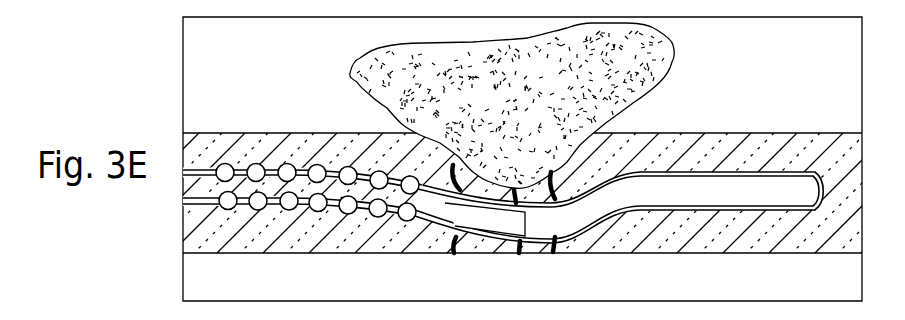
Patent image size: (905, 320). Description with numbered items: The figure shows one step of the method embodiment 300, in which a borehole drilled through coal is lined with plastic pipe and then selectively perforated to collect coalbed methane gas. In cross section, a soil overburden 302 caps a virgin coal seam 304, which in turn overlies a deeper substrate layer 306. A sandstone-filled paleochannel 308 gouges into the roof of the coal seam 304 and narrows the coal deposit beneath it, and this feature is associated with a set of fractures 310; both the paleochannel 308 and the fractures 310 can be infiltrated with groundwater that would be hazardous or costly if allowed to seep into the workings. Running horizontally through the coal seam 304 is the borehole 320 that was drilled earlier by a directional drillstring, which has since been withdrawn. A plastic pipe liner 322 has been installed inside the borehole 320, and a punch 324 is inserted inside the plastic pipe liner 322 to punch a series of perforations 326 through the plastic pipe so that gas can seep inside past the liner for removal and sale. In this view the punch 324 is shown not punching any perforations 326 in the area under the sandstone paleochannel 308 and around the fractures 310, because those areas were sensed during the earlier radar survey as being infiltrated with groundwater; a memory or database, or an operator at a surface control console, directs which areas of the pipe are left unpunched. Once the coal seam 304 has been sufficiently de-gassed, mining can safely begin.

The method embodiment 300 is at (117, 65).
The soil overburden 302 is at (264, 59).
The virgin coal seam 304 is at (711, 160).
The substrate layer 306 is at (352, 285).
The sandstone-filled paleochannel 308 is at (502, 106).
The fractures 310 is at (452, 254).
The borehole 320 is at (718, 211).
The plastic pipe liner 322 is at (664, 204).
The punch 324 is at (529, 225).
The perforations 326 is at (347, 166).